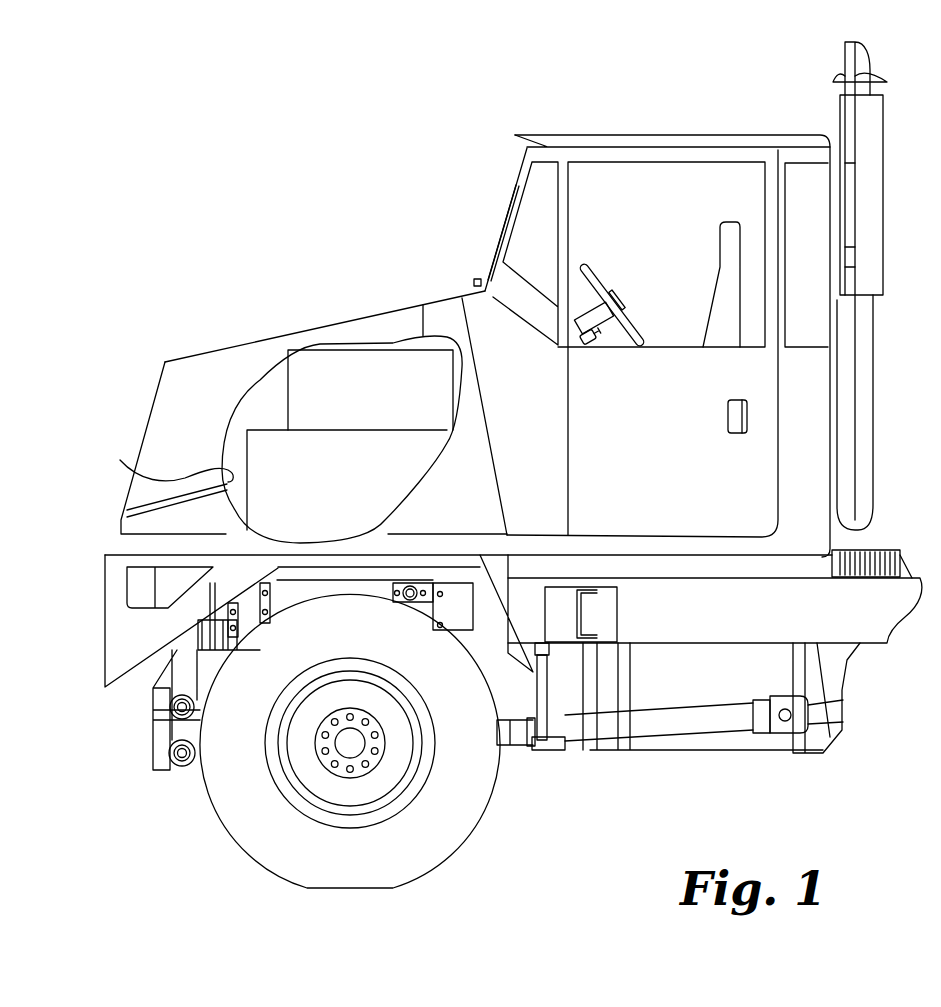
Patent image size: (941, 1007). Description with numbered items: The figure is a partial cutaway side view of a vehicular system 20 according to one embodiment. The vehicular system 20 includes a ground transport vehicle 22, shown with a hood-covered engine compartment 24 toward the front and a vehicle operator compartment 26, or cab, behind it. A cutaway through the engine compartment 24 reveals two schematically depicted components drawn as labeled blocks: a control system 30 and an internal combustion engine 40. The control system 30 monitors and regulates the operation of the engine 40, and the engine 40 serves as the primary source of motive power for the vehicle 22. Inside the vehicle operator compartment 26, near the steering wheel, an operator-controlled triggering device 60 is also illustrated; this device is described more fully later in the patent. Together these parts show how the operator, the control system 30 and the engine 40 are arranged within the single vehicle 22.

The vehicular system 20 is at (198, 242).
The ground transport vehicle 22 is at (175, 348).
The engine compartment 24 is at (161, 458).
The vehicle operator compartment 26 is at (655, 165).
The control system 30 is at (385, 418).
The internal combustion engine 40 is at (353, 523).
The operator-controlled triggering device 60 is at (596, 347).